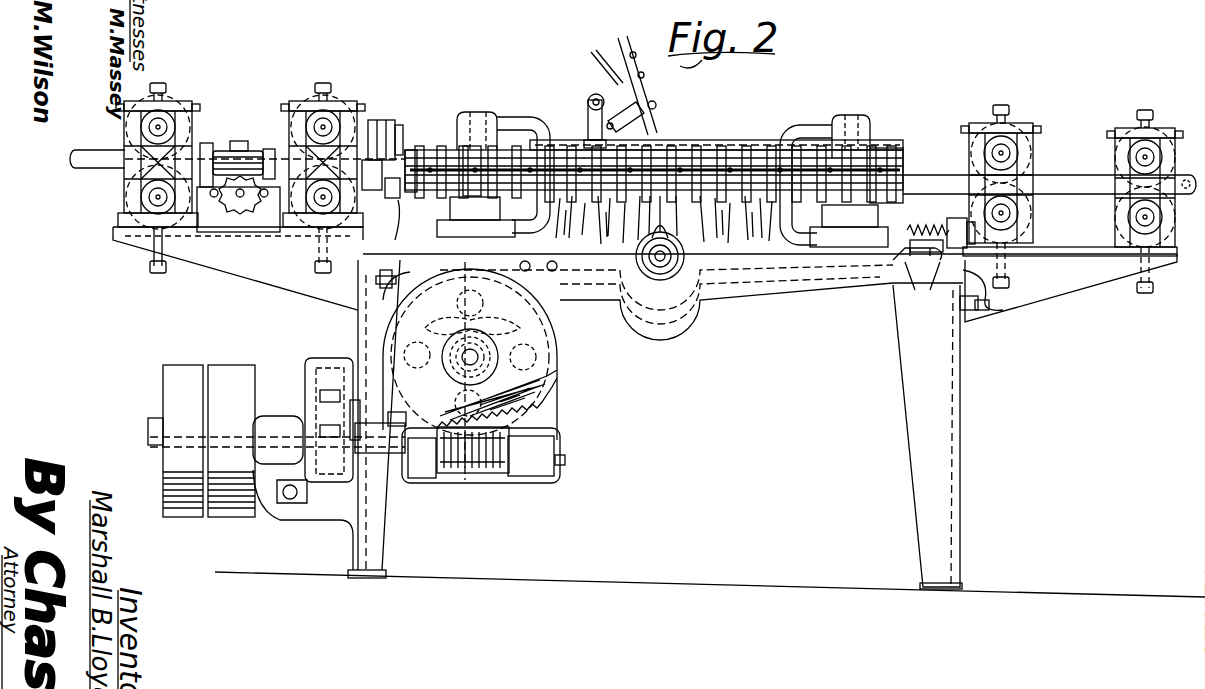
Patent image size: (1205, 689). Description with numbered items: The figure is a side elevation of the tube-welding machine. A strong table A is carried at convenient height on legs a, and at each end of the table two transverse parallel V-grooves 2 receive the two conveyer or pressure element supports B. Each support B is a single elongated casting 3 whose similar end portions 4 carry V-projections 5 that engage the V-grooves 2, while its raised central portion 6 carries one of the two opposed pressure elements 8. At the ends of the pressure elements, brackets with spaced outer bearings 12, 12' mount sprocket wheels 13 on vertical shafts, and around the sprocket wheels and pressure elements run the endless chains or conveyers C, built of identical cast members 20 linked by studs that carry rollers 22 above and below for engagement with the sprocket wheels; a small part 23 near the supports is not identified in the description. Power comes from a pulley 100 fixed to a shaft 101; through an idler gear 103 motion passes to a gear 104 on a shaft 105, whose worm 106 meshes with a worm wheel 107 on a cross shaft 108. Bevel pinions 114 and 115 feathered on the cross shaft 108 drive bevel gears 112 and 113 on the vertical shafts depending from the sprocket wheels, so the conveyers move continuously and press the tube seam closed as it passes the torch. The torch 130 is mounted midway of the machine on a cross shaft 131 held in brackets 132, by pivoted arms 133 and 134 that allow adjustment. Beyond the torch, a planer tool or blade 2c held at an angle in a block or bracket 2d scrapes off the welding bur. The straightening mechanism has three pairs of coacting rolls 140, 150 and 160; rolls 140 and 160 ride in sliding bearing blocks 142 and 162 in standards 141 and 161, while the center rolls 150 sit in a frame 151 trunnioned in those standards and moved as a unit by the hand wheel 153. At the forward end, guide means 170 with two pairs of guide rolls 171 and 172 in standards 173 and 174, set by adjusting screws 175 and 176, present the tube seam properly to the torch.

The transverse parallel V-grooves 2 is at (398, 200).
The planer tool or blade 2c is at (398, 125).
The block or bracket 2d is at (372, 120).
The elongated casting 3 is at (770, 275).
The end portions 4 is at (432, 240).
The V-projections 5 is at (395, 275).
The central portion 6 is at (690, 240).
The pressure elements 8 is at (720, 140).
The outer bearing 12 is at (483, 164).
The outer bearing 12' is at (835, 170).
The sprocket wheel 13 is at (470, 148).
The identical members 20 is at (410, 150).
The rollers 22 is at (418, 150).
The shaft 23 is at (668, 248).
The power pulley 100 is at (276, 451).
The shaft 101 is at (272, 425).
The idler gear 103 is at (335, 372).
The gear 104 is at (303, 520).
The shaft 105 is at (566, 462).
The worm 106 is at (474, 475).
The worm wheel 107 is at (557, 408).
The cross shaft 108 is at (500, 394).
The bevel gear 112 is at (935, 262).
The bevel gear 113 is at (948, 220).
The bevel pinion 114 is at (1000, 312).
The bevel pinion 115 is at (470, 353).
The torch 130 is at (612, 92).
The cross shaft 131 is at (589, 97).
The bearings or brackets 132 is at (588, 126).
The pivoted arm 133 is at (625, 120).
The pivoted arm 134 is at (656, 106).
The pair of coacting rolls 140 is at (387, 135).
The standards 141 is at (390, 120).
The sliding bearing blocks 142 is at (316, 100).
The pair of rolls 150 is at (238, 189).
The frame 151 is at (207, 150).
The hand wheel 153 is at (238, 210).
The pair of coacting rolls 160 is at (158, 174).
The standards 161 is at (135, 175).
The sliding bearing blocks 162 is at (181, 127).
The tube presenting means 170 is at (1065, 158).
The pair of guide rolls 171 is at (981, 151).
The pair of guide rolls 172 is at (1122, 157).
The standard 173 is at (1019, 213).
The standard 174 is at (1127, 217).
The adjusting screw 175 is at (999, 185).
The adjusting screw 176 is at (1126, 190).
The legs a is at (908, 465).
The table A is at (748, 329).
The conveyer or pressure element supports B is at (664, 221).
The endless chains or conveyers C is at (655, 151).